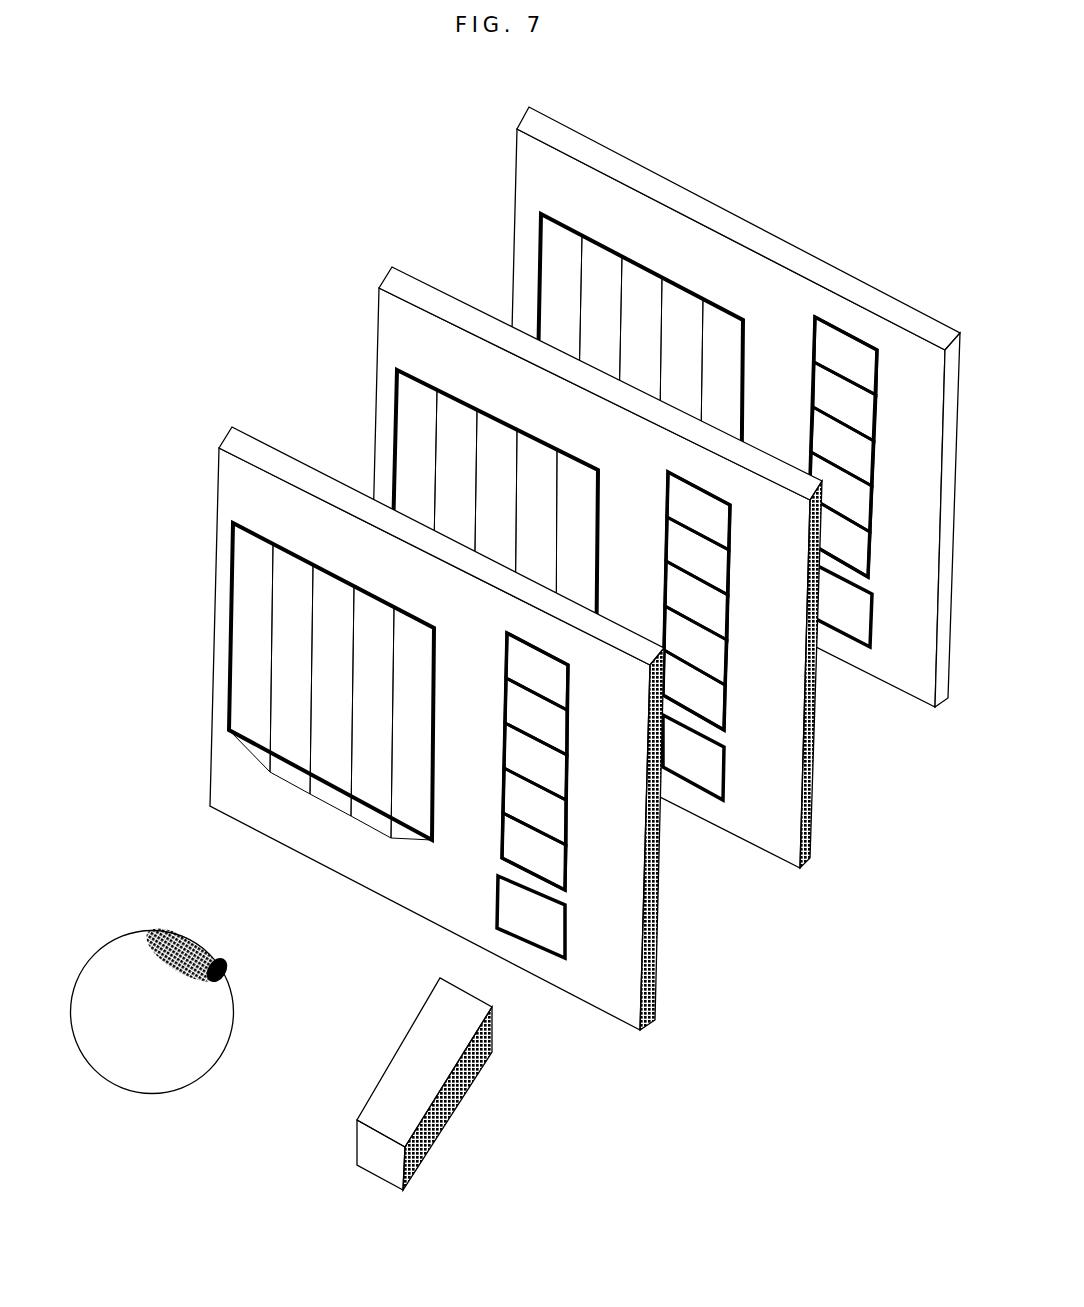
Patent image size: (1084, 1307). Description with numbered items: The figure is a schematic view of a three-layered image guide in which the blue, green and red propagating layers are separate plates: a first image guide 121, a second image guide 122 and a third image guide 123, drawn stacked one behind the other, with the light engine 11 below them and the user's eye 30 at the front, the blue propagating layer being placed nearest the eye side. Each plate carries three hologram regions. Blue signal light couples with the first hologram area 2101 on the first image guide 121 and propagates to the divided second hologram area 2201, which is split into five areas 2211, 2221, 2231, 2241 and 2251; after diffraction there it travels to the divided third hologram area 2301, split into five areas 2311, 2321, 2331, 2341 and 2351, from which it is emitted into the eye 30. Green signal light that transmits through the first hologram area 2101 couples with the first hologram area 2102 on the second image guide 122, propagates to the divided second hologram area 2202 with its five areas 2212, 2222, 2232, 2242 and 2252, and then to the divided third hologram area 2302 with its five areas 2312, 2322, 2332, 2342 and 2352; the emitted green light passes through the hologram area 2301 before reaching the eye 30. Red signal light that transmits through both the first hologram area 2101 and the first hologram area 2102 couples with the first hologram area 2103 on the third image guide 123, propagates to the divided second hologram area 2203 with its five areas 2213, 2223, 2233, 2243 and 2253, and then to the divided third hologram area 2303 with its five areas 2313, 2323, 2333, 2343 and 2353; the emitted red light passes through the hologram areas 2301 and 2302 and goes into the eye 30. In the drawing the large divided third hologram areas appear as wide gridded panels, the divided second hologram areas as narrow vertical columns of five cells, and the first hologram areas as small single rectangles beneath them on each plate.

The light engine 11 is at (375, 1165).
The user's eye 30 is at (100, 1073).
The first image guide 121 is at (297, 480).
The second image guide 122 is at (457, 320).
The third image guide 123 is at (605, 162).
The first hologram area 2101 is at (556, 925).
The first hologram area 2102 is at (717, 782).
The first hologram area 2103 is at (860, 607).
The second hologram area 2201 is at (502, 733).
The second hologram area 2202 is at (662, 553).
The second hologram area 2203 is at (810, 390).
The divided area 2211 is at (556, 857).
The divided area 2221 is at (556, 809).
The divided area 2231 is at (556, 767).
The divided area 2241 is at (556, 728).
The divided area 2251 is at (555, 690).
The divided area 2212 is at (717, 700).
The divided area 2222 is at (717, 655).
The divided area 2232 is at (717, 613).
The divided area 2242 is at (717, 570).
The divided area 2252 is at (715, 530).
The divided area 2213 is at (862, 547).
The divided area 2223 is at (863, 502).
The divided area 2233 is at (865, 457).
The divided area 2243 is at (865, 420).
The divided area 2253 is at (865, 378).
The third hologram area 2301 is at (440, 700).
The third hologram area 2302 is at (600, 543).
The third hologram area 2303 is at (750, 395).
The divided area 2311 is at (408, 633).
The divided area 2321 is at (369, 612).
The divided area 2331 is at (327, 588).
The divided area 2341 is at (284, 570).
The divided area 2351 is at (247, 547).
The divided area 2312 is at (572, 480).
The divided area 2322 is at (528, 458).
The divided area 2332 is at (490, 432).
The divided area 2342 is at (450, 408).
The divided area 2352 is at (412, 383).
The divided area 2313 is at (715, 328).
The divided area 2323 is at (673, 310).
The divided area 2333 is at (633, 283).
The divided area 2343 is at (593, 265).
The divided area 2353 is at (552, 242).